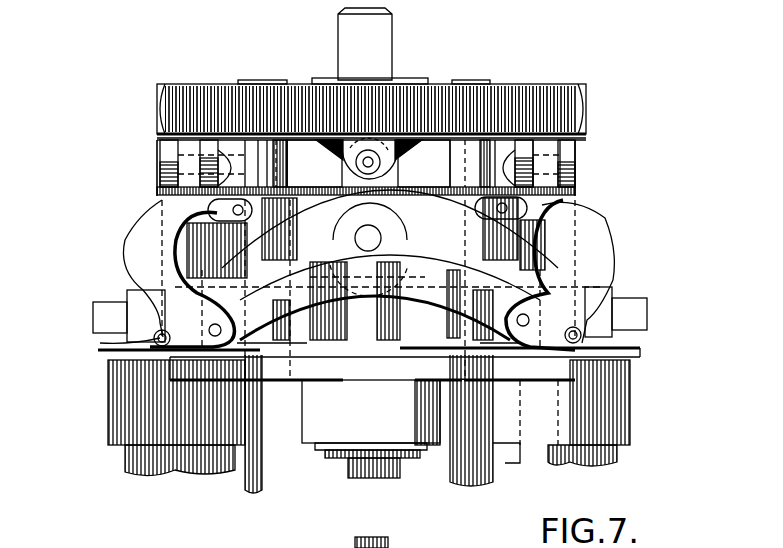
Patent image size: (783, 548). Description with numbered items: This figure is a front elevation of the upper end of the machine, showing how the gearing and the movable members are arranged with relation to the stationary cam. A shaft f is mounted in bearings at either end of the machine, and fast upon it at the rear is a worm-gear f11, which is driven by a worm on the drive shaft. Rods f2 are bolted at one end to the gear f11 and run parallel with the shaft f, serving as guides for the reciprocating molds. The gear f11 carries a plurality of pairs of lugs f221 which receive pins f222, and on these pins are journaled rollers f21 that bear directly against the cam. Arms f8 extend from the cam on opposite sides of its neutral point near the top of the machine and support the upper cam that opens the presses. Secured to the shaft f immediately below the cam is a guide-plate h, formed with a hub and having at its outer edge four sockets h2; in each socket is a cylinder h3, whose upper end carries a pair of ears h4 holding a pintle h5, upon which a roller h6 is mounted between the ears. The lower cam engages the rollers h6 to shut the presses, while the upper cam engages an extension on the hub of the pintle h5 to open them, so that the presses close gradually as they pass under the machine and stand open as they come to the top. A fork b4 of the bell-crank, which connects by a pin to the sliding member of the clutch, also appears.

The worm-gear f11 is at (165, 105).
The rollers f21 is at (180, 150).
The lugs f221 is at (368, 162).
The pins f222 is at (430, 137).
The arms f8 is at (130, 225).
The rods f2 is at (247, 490).
The shaft f is at (362, 474).
The guide-plate h is at (225, 368).
The sockets h2 is at (112, 402).
The cylinder h3 is at (128, 462).
The ears h4 is at (128, 290).
The pintle h5 is at (440, 546).
The roller h6 is at (322, 197).
The fork b4 is at (424, 164).